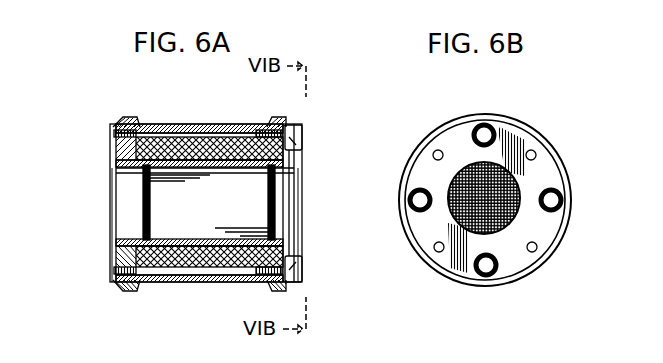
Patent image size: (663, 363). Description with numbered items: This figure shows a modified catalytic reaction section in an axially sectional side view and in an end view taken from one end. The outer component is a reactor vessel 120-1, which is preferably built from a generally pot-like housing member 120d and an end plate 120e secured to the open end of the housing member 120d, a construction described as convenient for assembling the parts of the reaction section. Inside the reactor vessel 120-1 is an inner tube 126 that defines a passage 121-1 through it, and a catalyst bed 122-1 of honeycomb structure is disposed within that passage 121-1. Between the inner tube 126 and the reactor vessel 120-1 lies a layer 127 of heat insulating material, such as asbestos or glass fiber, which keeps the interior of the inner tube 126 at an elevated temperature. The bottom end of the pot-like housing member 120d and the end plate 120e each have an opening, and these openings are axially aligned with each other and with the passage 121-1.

In FIG. 6A, the reactor vessel 120-1 is at (188, 116).
In FIG. 6B, the reactor vessel 120-1 is at (536, 118).
In FIG. 6A, the pot-like housing member 120d is at (163, 127).
In FIG. 6B, the pot-like housing member 120d is at (564, 166).
In FIG. 6A, the layer of heat insulating material 127 is at (218, 133).
In FIG. 6A, the end plate 120e is at (299, 148).
In FIG. 6B, the end plate 120e is at (540, 233).
In FIG. 6A, the passage 121-1 is at (105, 210).
In FIG. 6A, the inner tube 126 is at (176, 284).
In FIG. 6A, the catalyst bed 122-1 is at (232, 285).
In FIG. 6B, the catalyst bed 122-1 is at (455, 216).